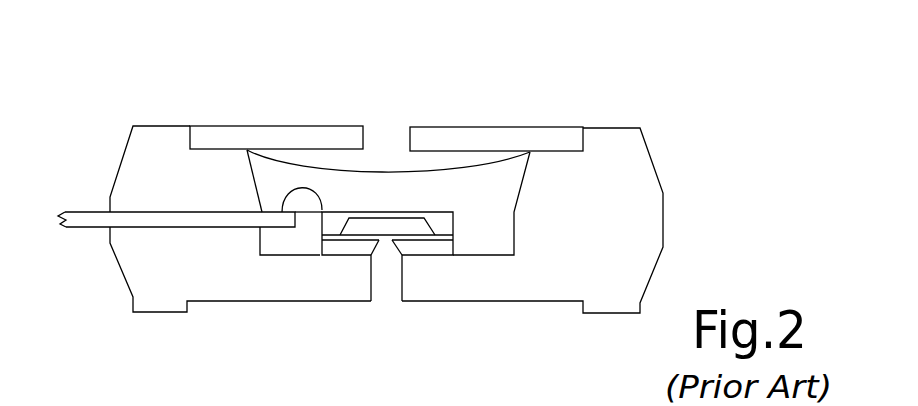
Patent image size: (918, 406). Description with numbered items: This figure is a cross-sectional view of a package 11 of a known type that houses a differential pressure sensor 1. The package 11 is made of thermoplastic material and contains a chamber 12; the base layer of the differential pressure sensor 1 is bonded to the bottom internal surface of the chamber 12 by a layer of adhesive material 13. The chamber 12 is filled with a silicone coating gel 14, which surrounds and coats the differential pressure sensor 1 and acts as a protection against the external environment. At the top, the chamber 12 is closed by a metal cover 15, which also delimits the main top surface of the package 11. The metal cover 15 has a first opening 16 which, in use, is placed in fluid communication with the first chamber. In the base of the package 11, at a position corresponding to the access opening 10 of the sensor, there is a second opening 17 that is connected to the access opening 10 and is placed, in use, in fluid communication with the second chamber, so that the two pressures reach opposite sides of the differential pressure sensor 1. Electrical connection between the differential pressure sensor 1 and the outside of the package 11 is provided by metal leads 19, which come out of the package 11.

The differential pressure sensor 1 is at (477, 208).
The access opening 10 is at (391, 256).
The package 11 is at (706, 174).
The chamber 12 is at (270, 196).
The layer of adhesive material 13 is at (453, 252).
The silicone coating gel 14 is at (450, 201).
The metal cover 15 is at (482, 143).
The first opening 16 is at (373, 132).
The second opening 17 is at (379, 299).
The metal leads 19 is at (80, 212).